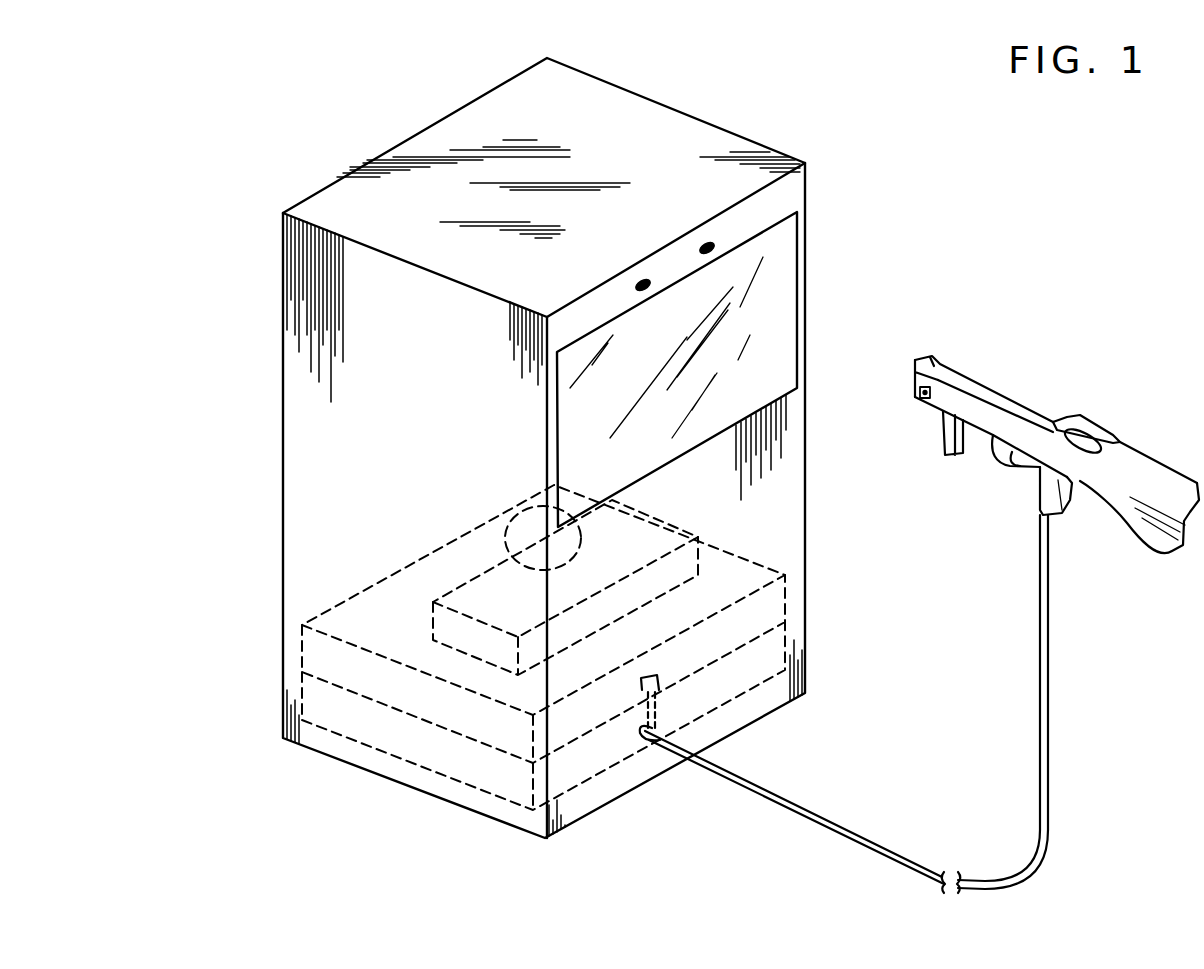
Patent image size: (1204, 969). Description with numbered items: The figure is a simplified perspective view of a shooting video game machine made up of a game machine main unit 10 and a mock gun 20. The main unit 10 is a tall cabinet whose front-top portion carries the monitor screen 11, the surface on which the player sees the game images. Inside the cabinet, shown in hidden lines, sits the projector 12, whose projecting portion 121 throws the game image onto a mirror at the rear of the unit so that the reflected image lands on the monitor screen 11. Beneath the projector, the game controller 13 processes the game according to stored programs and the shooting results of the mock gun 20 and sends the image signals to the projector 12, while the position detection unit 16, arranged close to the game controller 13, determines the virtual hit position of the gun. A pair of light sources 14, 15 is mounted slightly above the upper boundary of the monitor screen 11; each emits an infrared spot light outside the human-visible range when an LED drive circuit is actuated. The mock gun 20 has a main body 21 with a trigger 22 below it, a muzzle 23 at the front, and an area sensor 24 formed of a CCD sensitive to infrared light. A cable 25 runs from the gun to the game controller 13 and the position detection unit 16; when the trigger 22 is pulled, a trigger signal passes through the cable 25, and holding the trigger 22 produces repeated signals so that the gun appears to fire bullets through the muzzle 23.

The game machine main unit 10 is at (762, 137).
The monitor screen 11 is at (783, 298).
The projector 12 is at (463, 600).
The projecting portion 121 is at (508, 507).
The game controller 13 is at (470, 768).
The light source 14 is at (638, 282).
The light source 15 is at (703, 245).
The position detection unit 16 is at (377, 689).
The mock gun 20 is at (1047, 409).
The main body 21 is at (1087, 478).
The trigger 22 is at (1007, 468).
The muzzle 23 is at (913, 358).
The area sensor 24 is at (920, 402).
The cable 25 is at (882, 846).